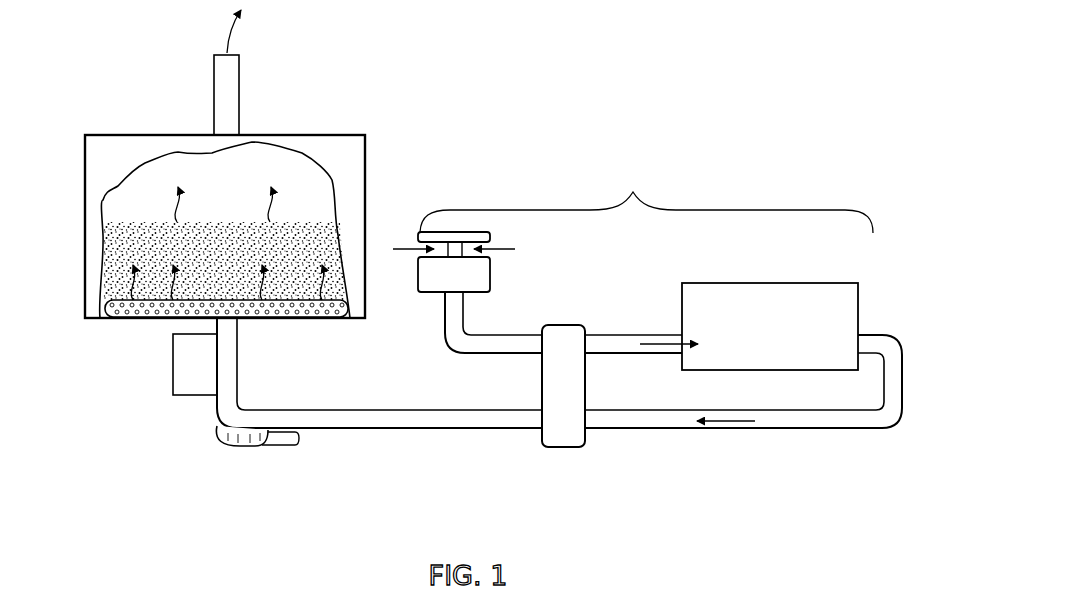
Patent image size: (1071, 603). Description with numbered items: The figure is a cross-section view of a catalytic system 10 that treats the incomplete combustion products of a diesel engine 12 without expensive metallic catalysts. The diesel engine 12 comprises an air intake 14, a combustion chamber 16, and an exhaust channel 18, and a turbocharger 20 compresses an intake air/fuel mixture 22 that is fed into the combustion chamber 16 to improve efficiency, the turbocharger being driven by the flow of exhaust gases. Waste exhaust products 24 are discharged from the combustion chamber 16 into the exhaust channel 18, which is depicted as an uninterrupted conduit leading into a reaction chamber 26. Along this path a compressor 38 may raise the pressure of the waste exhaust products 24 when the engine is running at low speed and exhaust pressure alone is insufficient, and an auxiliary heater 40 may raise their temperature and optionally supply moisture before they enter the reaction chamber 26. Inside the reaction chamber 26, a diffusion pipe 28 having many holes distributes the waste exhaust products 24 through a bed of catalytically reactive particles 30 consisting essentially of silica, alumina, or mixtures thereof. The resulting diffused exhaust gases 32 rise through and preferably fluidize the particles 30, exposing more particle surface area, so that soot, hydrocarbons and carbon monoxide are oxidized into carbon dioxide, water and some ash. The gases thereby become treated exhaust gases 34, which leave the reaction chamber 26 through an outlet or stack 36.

The catalytic system 10 is at (512, 122).
The diesel engine 12 is at (646, 200).
The air intake 14 is at (438, 285).
The combustion chamber 16 is at (808, 292).
The exhaust channel 18 is at (364, 430).
The turbocharger 20 is at (580, 392).
The intake air/fuel mixture 22 is at (654, 343).
The waste exhaust products 24 is at (724, 423).
The reaction chamber 26 is at (93, 150).
The diffusion pipe 28 is at (288, 318).
The catalytically reactive particles 30 is at (212, 273).
The diffused exhaust gases 32 is at (173, 288).
The treated exhaust gases 34 is at (226, 32).
The outlet or stack 36 is at (221, 80).
The compressor 38 is at (218, 436).
The auxiliary heater 40 is at (173, 375).